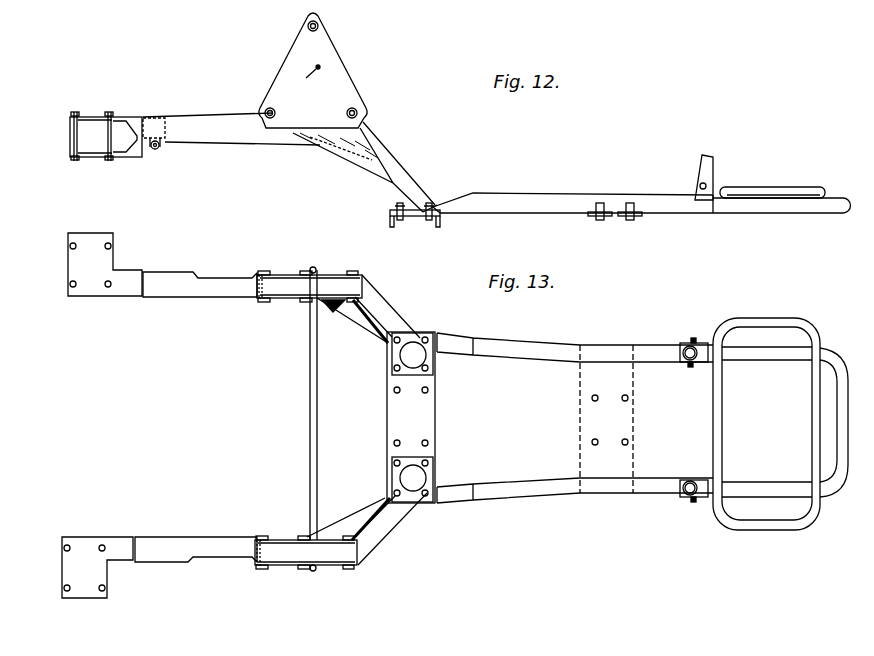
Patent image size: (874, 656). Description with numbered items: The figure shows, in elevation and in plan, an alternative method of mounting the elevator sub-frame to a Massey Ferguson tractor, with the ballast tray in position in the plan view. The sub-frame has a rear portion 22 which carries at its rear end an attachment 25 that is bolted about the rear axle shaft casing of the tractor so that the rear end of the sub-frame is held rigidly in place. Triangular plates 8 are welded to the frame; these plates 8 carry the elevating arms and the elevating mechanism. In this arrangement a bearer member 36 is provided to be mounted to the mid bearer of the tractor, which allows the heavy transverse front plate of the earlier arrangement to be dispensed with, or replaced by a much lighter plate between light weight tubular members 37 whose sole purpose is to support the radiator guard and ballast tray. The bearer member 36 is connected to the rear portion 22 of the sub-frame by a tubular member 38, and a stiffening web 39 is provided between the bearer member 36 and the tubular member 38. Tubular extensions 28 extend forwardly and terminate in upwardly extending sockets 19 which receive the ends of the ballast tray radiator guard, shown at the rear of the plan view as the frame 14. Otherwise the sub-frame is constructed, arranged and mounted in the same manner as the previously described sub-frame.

In FIG. 12, the triangular plate 8 is at (290, 57).
In FIG. 13, the triangular plate 8 is at (333, 275).
In FIG. 12, the rear frame 14 is at (833, 213).
In FIG. 13, the rear frame 14 is at (820, 355).
In FIG. 12, the upwardly extending socket 19 is at (710, 162).
In FIG. 13, the upwardly extending socket 19 is at (687, 343).
In FIG. 12, the rear portion 22 is at (217, 133).
In FIG. 13, the rear portion 22 is at (173, 290).
In FIG. 13, the attachment 25 is at (91, 286).
In FIG. 13, the tubular extension 28 is at (645, 487).
In FIG. 12, the bearer member 36 is at (416, 222).
In FIG. 13, the bearer member 36 is at (430, 425).
In FIG. 12, the tubular member 37 is at (550, 205).
In FIG. 13, the tubular member 37 is at (523, 350).
In FIG. 12, the tubular member 38 is at (397, 173).
In FIG. 13, the tubular member 38 is at (390, 312).
In FIG. 12, the stiffening web 39 is at (345, 147).
In FIG. 13, the stiffening web 39 is at (350, 318).